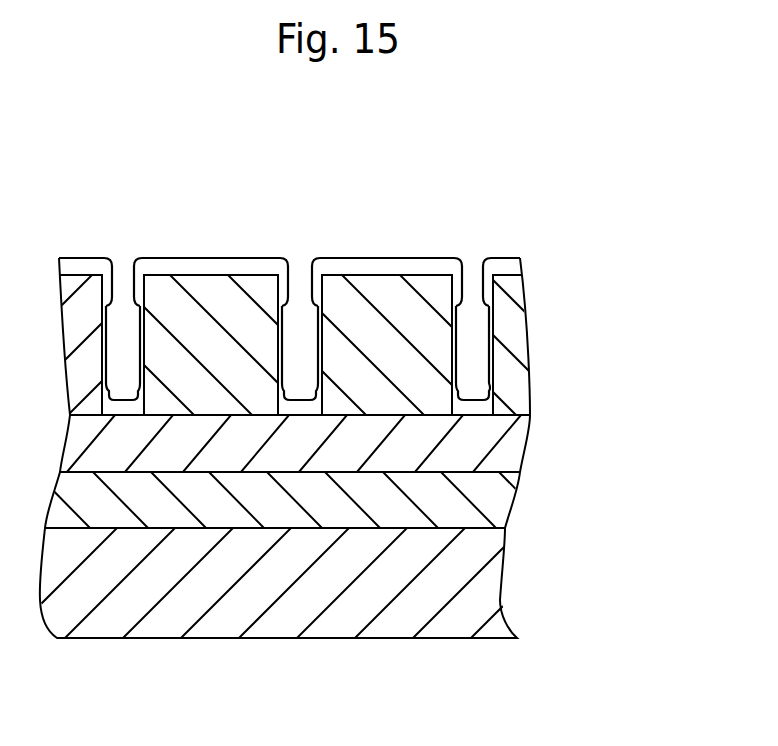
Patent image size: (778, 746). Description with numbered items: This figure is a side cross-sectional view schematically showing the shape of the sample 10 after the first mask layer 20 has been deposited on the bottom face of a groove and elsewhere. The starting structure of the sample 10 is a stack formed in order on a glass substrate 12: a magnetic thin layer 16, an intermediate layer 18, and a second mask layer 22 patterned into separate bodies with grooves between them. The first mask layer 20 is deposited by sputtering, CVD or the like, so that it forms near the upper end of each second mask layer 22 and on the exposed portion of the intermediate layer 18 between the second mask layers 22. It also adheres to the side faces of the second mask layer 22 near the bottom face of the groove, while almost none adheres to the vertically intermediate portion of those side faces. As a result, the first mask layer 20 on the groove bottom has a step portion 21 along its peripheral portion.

The sample 10 is at (318, 165).
The glass substrate 12 is at (500, 586).
The magnetic thin layer 16 is at (510, 507).
The intermediate layer 18 is at (530, 452).
The first mask layer 20 is at (484, 408).
The step portion 21 is at (452, 387).
The second mask layer 22 is at (533, 348).